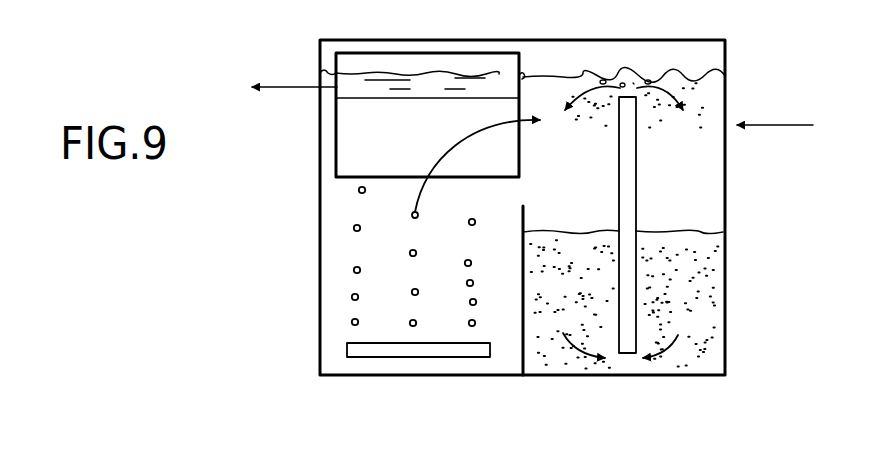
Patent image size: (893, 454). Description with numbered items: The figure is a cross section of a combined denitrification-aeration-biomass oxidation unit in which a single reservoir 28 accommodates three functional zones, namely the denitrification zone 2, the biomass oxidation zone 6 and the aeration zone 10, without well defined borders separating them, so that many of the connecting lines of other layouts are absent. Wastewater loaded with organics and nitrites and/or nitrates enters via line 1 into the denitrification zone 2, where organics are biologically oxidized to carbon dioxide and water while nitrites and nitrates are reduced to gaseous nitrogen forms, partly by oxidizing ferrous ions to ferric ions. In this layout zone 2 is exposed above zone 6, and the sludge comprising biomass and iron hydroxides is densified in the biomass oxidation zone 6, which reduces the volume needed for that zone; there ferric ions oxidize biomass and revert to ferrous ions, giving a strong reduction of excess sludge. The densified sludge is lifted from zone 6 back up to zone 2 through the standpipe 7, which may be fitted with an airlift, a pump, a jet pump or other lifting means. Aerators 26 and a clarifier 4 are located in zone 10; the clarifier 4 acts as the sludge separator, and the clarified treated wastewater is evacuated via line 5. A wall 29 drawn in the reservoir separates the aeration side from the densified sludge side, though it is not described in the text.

The wastewater feed line 1 is at (765, 123).
The denitrification zone 2 is at (698, 193).
The sludge separator 4 is at (368, 120).
The treated wastewater outlet line 5 is at (307, 83).
The biomass oxidation zone 6 is at (688, 305).
The standpipe 7 is at (627, 193).
The aeration zone 10 is at (380, 257).
The aerator 26 is at (425, 350).
The reservoir 28 is at (725, 220).
The dividing wall 29 is at (522, 350).